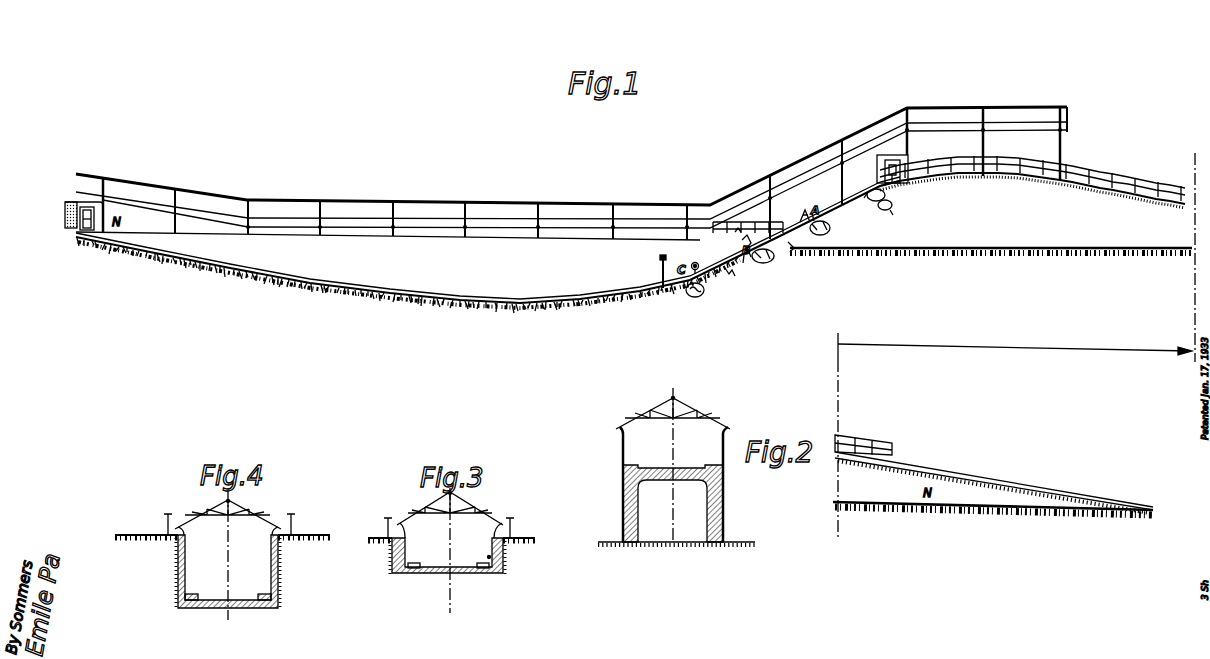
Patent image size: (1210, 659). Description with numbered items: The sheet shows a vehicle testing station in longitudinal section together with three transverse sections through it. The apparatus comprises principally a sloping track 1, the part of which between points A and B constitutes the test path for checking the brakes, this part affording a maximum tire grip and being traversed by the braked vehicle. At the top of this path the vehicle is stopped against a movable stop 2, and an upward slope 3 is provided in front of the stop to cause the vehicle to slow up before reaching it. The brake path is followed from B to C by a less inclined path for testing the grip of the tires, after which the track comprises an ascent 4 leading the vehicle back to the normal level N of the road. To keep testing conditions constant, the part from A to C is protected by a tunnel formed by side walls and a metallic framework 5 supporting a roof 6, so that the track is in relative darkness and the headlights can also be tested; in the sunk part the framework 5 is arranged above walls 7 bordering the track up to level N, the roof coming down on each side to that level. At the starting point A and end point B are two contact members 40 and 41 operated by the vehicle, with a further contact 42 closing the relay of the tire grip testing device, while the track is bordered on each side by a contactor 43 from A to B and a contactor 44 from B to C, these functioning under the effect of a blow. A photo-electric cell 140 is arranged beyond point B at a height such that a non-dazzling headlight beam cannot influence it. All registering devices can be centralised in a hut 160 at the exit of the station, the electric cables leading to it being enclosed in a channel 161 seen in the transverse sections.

In FIG. 1, the sloping track 1 is at (828, 217).
In FIG. 1, the movable stop 2 is at (867, 189).
In FIG. 1, the upward slope 3 is at (1177, 200).
In FIG. 1, the ascent 4 is at (336, 283).
In FIG. 1, the metallic framework 5 is at (541, 214).
In FIG. 3, the metallic framework 5 is at (421, 516).
In FIG. 1, the roof 6 is at (603, 205).
In FIG. 3, the roof 6 is at (471, 511).
In FIG. 1, the walls 7 is at (414, 275).
In FIG. 1, the contact member 40 is at (823, 230).
In FIG. 1, the contact member 41 is at (773, 265).
In FIG. 1, the contact 42 is at (695, 299).
In FIG. 1, the contactor 43 is at (790, 243).
In FIG. 1, the contactor 44 is at (728, 270).
In FIG. 3, the contactor 44 is at (448, 560).
In FIG. 1, the photo-electric cell 140 is at (694, 260).
In FIG. 3, the photo-electric cell 140 is at (481, 549).
In FIG. 1, the hut 160 is at (76, 196).
In FIG. 3, the channel 161 is at (399, 576).
In FIG. 4, the channel 161 is at (280, 605).